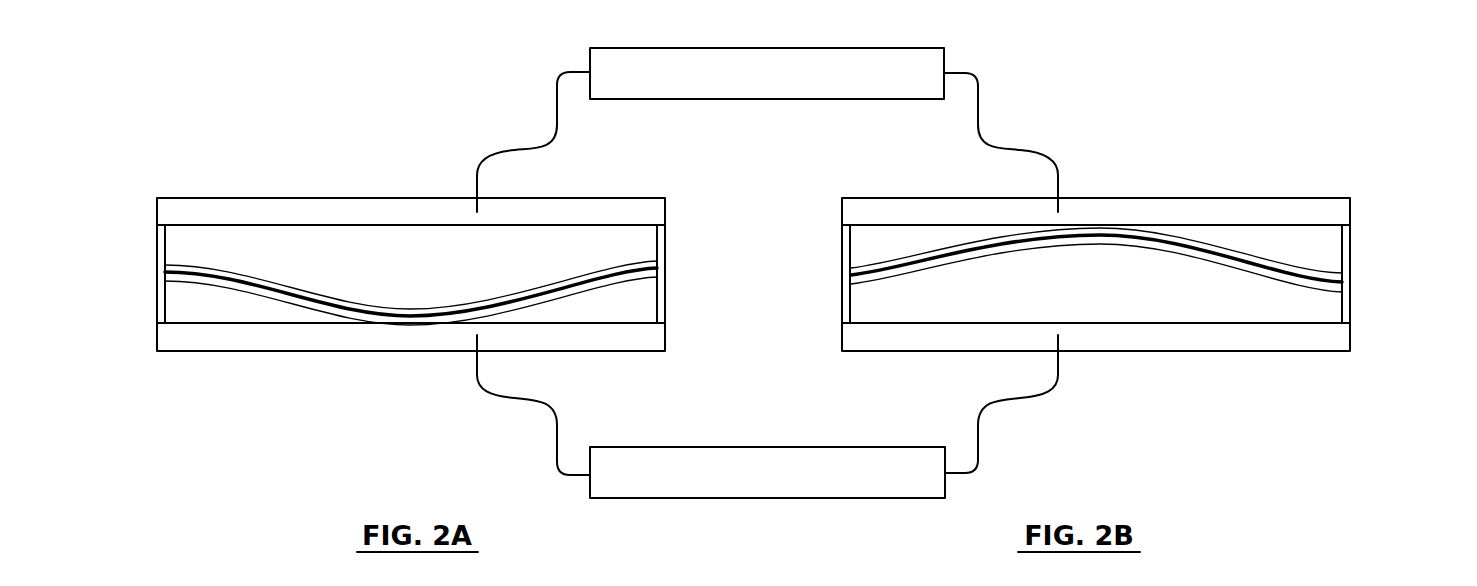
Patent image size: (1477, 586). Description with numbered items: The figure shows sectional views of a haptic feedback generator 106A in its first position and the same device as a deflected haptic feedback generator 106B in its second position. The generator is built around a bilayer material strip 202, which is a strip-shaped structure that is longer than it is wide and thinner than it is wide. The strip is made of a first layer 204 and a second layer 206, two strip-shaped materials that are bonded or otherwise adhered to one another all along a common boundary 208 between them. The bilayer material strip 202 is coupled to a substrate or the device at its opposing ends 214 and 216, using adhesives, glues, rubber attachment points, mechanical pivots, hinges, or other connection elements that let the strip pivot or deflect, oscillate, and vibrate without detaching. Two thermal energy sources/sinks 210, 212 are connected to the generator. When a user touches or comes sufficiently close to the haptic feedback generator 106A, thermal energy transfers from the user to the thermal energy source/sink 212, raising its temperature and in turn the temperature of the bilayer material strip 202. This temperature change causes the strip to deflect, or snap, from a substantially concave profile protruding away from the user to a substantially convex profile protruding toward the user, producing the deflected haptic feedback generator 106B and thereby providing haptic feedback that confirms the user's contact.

In FIG. 2A, the haptic feedback generator 106A is at (315, 185).
In FIG. 2B, the deflected haptic feedback generator 106B is at (1162, 185).
In FIG. 2A, the bilayer material strip 202 is at (452, 309).
In FIG. 2B, the bilayer material strip 202 is at (1096, 260).
In FIG. 2A, the first layer 204 is at (633, 262).
In FIG. 2A, the second layer 206 is at (633, 282).
In FIG. 2A, the common boundary 208 is at (268, 297).
In FIG. 2A, the thermal energy source/sink 210 is at (745, 87).
In FIG. 2A, the first thermal energy source/sink 212 is at (745, 484).
In FIG. 2A, the opposing end 214 is at (377, 247).
In FIG. 2B, the opposing end 214 is at (851, 275).
In FIG. 2B, the opposing end 216 is at (1347, 280).